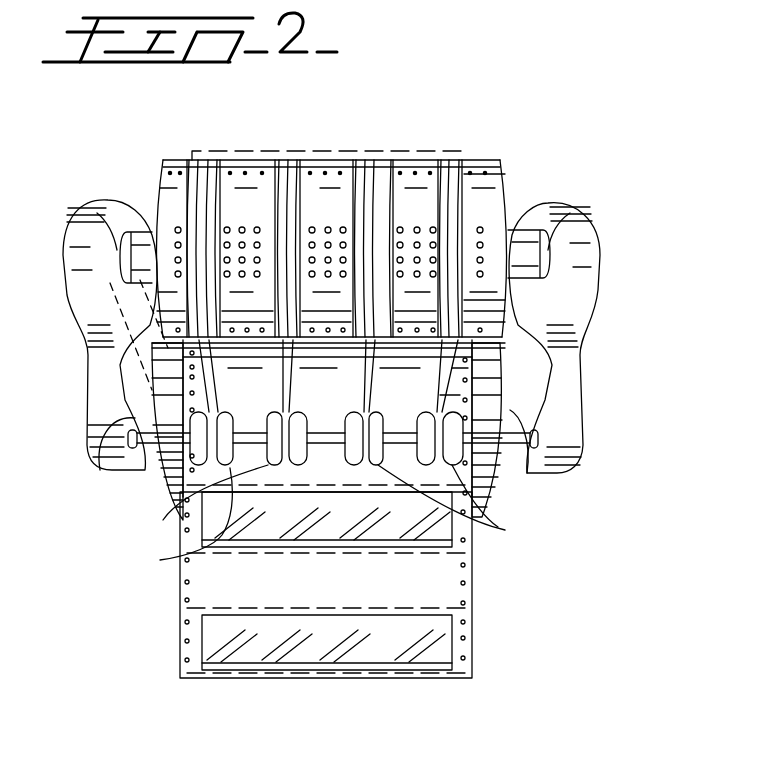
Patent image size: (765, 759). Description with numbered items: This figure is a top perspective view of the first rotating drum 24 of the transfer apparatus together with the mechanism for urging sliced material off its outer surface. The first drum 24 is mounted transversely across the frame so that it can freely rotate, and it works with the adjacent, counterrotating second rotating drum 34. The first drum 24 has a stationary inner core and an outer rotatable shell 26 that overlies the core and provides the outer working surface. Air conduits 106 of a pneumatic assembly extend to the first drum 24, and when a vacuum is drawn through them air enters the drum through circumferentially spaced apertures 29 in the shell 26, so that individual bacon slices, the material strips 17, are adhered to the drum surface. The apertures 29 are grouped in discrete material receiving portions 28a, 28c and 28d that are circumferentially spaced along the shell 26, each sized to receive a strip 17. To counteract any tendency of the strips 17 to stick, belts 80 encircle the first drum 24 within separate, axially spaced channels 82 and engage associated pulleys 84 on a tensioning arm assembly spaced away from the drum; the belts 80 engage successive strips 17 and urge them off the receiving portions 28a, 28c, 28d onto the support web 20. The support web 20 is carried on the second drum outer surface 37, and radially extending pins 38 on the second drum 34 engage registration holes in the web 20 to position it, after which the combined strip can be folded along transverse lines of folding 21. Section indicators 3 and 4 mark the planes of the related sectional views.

The first rotating drum 24 is at (152, 187).
The outer rotatable shell 26 is at (172, 168).
The channels 82 is at (220, 158).
The apertures 29 is at (254, 160).
The material strips 17 is at (455, 148).
The discrete material receiving portion 28a is at (482, 170).
The discrete material receiving portion 28d is at (485, 232).
The discrete material receiving portion 28c is at (462, 343).
The lugs or pins 38 is at (467, 398).
The section line 4- 4 is at (522, 136).
The section line 3- 3 is at (58, 277).
The air conduits 106 is at (128, 344).
The belts 80 is at (288, 378).
The second drum outer surface 37 is at (167, 475).
The second rotating drum 34 is at (503, 498).
The pulleys 84 is at (336, 512).
The support web 20 is at (341, 598).
The transverse lines of folding 21 is at (472, 605).